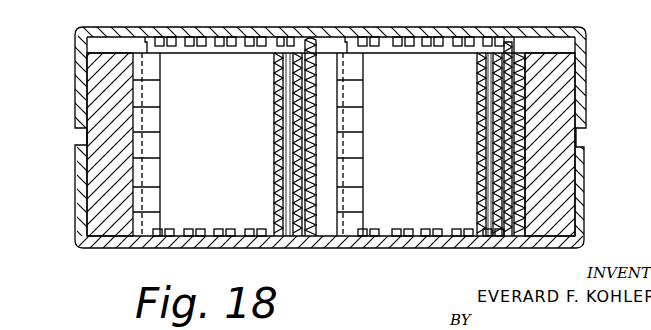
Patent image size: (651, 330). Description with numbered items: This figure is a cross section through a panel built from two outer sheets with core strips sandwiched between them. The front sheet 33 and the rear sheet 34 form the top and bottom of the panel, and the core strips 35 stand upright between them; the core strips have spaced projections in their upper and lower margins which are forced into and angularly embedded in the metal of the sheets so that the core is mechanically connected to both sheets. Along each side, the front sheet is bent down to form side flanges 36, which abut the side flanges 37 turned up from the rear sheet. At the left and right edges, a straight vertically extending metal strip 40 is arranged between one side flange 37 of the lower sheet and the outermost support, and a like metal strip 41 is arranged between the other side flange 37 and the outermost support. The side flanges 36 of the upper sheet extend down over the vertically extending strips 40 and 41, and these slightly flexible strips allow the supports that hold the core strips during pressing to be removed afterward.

The front sheet 33 is at (443, 28).
The rear sheet 34 is at (387, 249).
The core strips 35 is at (501, 53).
The side flanges 36 is at (75, 79).
The side flanges 37 is at (77, 190).
The metal strip 40 is at (90, 133).
The metal strip 41 is at (577, 135).